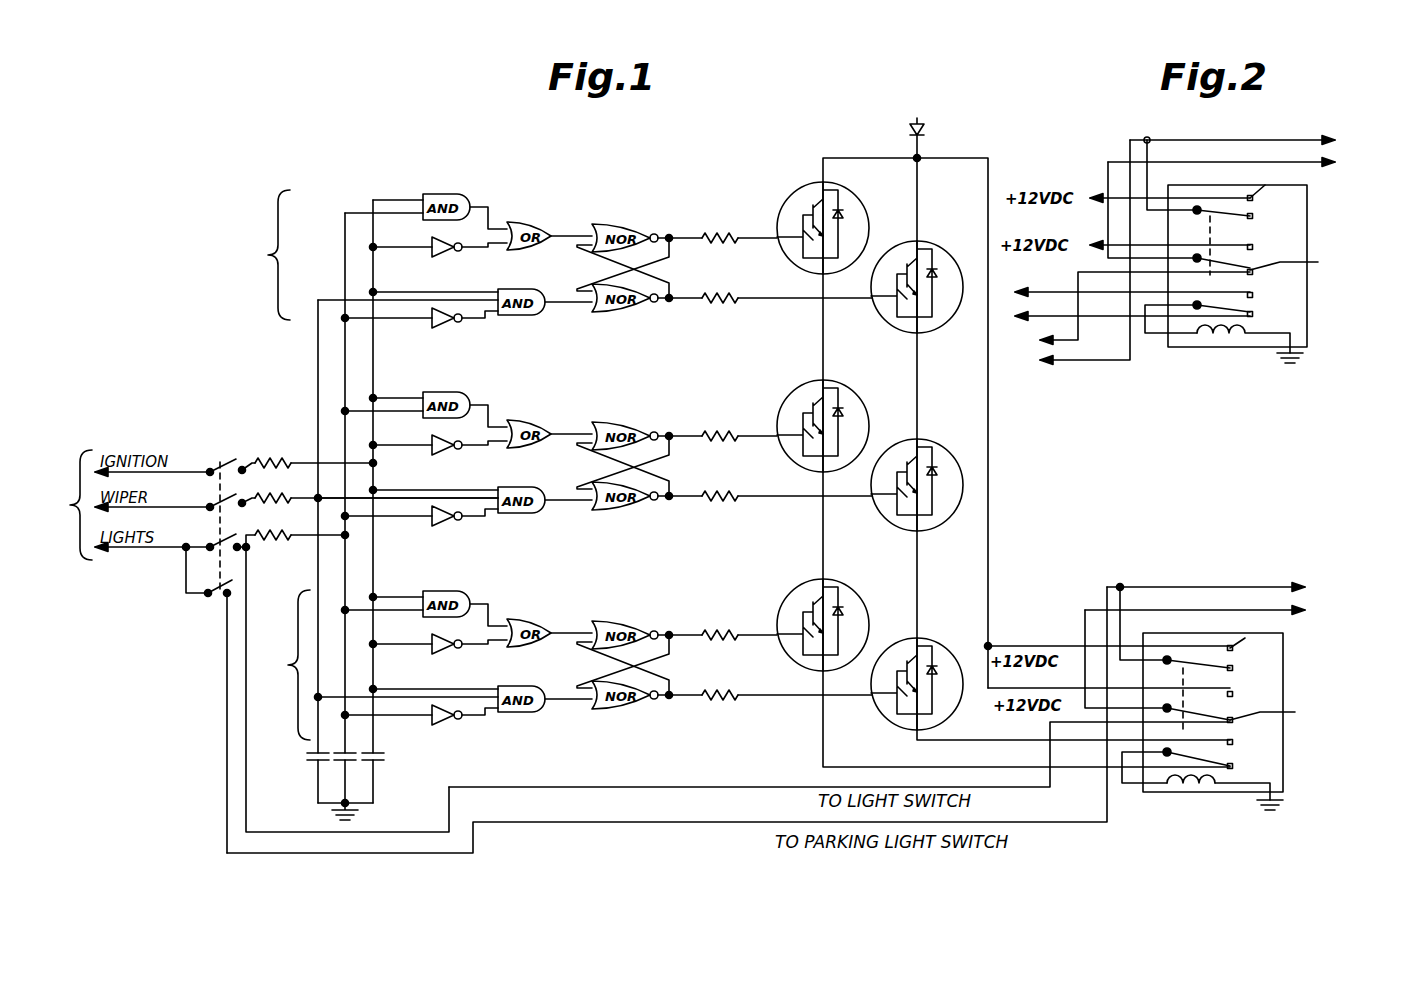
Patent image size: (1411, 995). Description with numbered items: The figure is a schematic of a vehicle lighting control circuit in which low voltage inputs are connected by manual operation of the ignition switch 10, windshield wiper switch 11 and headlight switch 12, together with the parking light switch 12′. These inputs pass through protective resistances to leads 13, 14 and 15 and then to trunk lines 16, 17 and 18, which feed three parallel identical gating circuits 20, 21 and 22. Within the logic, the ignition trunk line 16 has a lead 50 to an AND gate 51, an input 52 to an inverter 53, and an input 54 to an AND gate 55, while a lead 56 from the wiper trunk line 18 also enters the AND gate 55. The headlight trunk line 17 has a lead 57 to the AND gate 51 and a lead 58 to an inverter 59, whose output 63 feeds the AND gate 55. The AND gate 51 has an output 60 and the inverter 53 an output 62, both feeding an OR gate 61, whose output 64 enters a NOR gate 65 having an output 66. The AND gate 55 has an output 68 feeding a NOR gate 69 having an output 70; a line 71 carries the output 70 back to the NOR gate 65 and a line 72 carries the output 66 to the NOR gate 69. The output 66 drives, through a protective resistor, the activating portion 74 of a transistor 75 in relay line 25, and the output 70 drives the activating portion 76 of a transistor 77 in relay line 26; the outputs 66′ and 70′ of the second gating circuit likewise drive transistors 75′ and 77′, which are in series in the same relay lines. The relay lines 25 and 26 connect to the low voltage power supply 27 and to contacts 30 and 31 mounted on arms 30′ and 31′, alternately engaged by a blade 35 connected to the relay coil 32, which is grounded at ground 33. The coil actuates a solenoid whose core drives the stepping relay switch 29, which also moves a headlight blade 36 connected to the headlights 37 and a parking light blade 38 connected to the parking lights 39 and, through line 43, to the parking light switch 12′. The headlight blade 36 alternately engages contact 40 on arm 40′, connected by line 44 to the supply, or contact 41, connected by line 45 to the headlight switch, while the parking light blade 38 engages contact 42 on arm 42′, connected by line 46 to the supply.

In FIG. 1, the ignition switch 10 is at (232, 458).
In FIG. 1, the windshield wiper switch 11 is at (222, 505).
In FIG. 1, the headlight switch 12 is at (222, 543).
In FIG. 1, the parking light switch 12′ is at (215, 600).
In FIG. 1, the lead 13 is at (303, 462).
In FIG. 1, the lead 14 is at (303, 497).
In FIG. 1, the lead 15 is at (305, 534).
In FIG. 1, the trunk line 16 is at (375, 378).
In FIG. 1, the trunk line 17 is at (345, 346).
In FIG. 1, the trunk line 18 is at (318, 365).
In FIG. 1, the gating circuit 20 is at (258, 255).
In FIG. 1, the gating circuit 21 is at (62, 505).
In FIG. 1, the gating circuit 22 is at (279, 665).
In FIG. 1, the relay circuit line 25 is at (862, 158).
In FIG. 2, the relay circuit line 25 is at (1060, 315).
In FIG. 1, the relay circuit line 26 is at (917, 185).
In FIG. 2, the relay circuit line 26 is at (1055, 290).
In FIG. 1, the low voltage power supply 27 is at (918, 122).
In FIG. 1, the stepping relay switch 29 is at (1283, 688).
In FIG. 2, the stepping relay switch 29 is at (1307, 245).
In FIG. 1, the contact 30 is at (1232, 770).
In FIG. 2, the contact 30 is at (1252, 318).
In FIG. 1, the arm 30′ is at (1215, 788).
In FIG. 1, the contact 31 is at (1232, 748).
In FIG. 2, the contact 31 is at (1253, 300).
In FIG. 1, the arm 31′ is at (1228, 742).
In FIG. 2, the arm 31′ is at (1248, 296).
In FIG. 1, the relay coil 32 is at (1185, 790).
In FIG. 2, the relay coil 32 is at (1210, 345).
In FIG. 1, the ground 33 is at (1282, 806).
In FIG. 2, the ground 33 is at (1302, 360).
In FIG. 1, the blade 35 is at (1233, 762).
In FIG. 2, the blade 35 is at (1253, 312).
In FIG. 1, the headlight blade 36 is at (1233, 698).
In FIG. 2, the headlight blade 36 is at (1253, 250).
In FIG. 1, the headlights 37 is at (1238, 611).
In FIG. 2, the headlights 37 is at (1249, 164).
In FIG. 1, the parking light blade 38 is at (1233, 666).
In FIG. 2, the parking light blade 38 is at (1253, 212).
In FIG. 1, the parking lights 39 is at (1247, 588).
In FIG. 2, the parking lights 39 is at (1259, 141).
In FIG. 1, the contact 40 is at (1232, 716).
In FIG. 2, the contact 40 is at (1252, 266).
In FIG. 1, the arm 40′ is at (1199, 699).
In FIG. 2, the arm 40′ is at (1231, 245).
In FIG. 1, the contact 41 is at (1278, 711).
In FIG. 2, the contact 41 is at (1299, 261).
In FIG. 1, the contact 42 is at (1233, 645).
In FIG. 2, the contact 42 is at (1253, 195).
In FIG. 1, the arm 42′ is at (1206, 631).
In FIG. 2, the arm 42′ is at (1242, 179).
In FIG. 1, the line 43 is at (1110, 826).
In FIG. 2, the line 43 is at (1082, 362).
In FIG. 1, the line 44 is at (1078, 688).
In FIG. 2, the line 44 is at (1098, 244).
In FIG. 1, the line 45 is at (1055, 780).
In FIG. 2, the line 45 is at (1060, 350).
In FIG. 1, the line 46 is at (1070, 645).
In FIG. 2, the line 46 is at (1095, 196).
In FIG. 1, the lead 50 is at (425, 195).
In FIG. 1, the AND gate 51 is at (450, 194).
In FIG. 1, the input 52 is at (430, 245).
In FIG. 1, the inverter 53 is at (432, 252).
In FIG. 1, the input 54 is at (455, 290).
In FIG. 1, the AND gate 55 is at (535, 317).
In FIG. 1, the lead 56 is at (345, 300).
In FIG. 1, the lead 57 is at (345, 210).
In FIG. 1, the lead 58 is at (402, 320).
In FIG. 1, the inverter 59 is at (440, 326).
In FIG. 1, the output 60 is at (490, 200).
In FIG. 1, the OR gate 61 is at (520, 222).
In FIG. 1, the output 62 is at (462, 250).
In FIG. 1, the output 63 is at (472, 324).
In FIG. 1, the output 64 is at (575, 236).
In FIG. 1, the NOR gate 65 is at (618, 225).
In FIG. 1, the output 66 is at (669, 236).
In FIG. 1, the output 66′ is at (669, 434).
In FIG. 1, the output 68 is at (575, 305).
In FIG. 1, the NOR gate 69 is at (630, 312).
In FIG. 1, the output 70 is at (669, 300).
In FIG. 1, the output 70′ is at (669, 498).
In FIG. 1, the line 71 is at (665, 275).
In FIG. 1, the line 72 is at (665, 262).
In FIG. 1, the activating portion 74 is at (790, 250).
In FIG. 1, the transistor 75 is at (800, 185).
In FIG. 1, the transistor 75′ is at (798, 383).
In FIG. 1, the activating portion 76 is at (880, 310).
In FIG. 1, the transistor 77 is at (928, 245).
In FIG. 1, the transistor 77′ is at (928, 443).